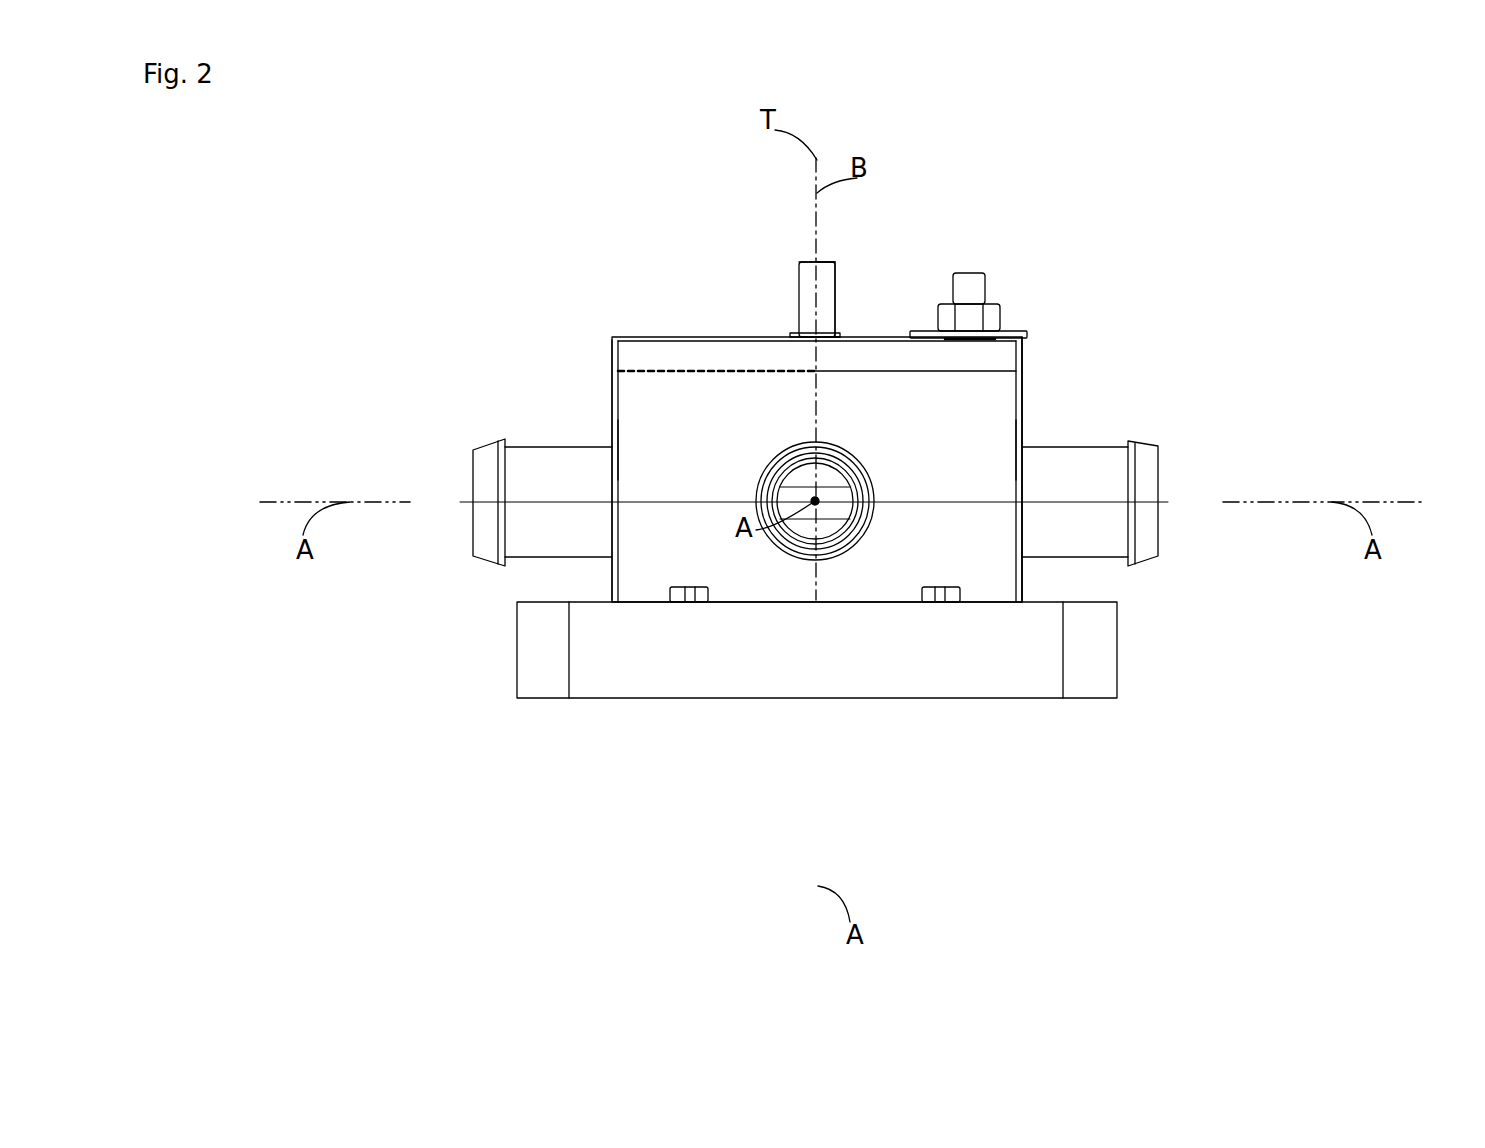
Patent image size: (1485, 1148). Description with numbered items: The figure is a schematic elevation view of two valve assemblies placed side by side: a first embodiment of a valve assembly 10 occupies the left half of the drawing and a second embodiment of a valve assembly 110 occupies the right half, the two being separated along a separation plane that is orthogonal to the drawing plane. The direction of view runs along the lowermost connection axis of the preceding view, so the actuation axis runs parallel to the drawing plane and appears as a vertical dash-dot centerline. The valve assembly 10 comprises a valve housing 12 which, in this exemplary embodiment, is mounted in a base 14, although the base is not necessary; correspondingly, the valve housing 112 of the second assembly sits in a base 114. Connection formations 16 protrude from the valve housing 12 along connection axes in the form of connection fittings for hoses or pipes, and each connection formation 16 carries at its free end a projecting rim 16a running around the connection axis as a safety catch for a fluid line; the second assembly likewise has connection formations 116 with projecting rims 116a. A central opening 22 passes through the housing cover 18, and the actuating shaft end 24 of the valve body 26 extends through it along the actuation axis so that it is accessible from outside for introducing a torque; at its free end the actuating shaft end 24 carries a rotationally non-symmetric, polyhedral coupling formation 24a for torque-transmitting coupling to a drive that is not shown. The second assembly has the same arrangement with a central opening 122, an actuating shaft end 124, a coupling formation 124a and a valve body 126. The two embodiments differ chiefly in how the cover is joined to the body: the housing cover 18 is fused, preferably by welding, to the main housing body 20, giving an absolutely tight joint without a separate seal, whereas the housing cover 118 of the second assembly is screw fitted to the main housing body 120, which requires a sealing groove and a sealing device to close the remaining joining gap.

The valve assembly 10 is at (345, 272).
The valve assembly 110 is at (1250, 270).
The valve housing 12 is at (602, 378).
The valve housing 112 is at (1028, 372).
The base 14 is at (535, 677).
The base 114 is at (1097, 670).
The connection formation 16 is at (553, 525).
The connection formation 116 is at (1072, 523).
The projecting rim 16a is at (490, 540).
The projecting rim 116a is at (1140, 532).
The housing cover 18 is at (678, 348).
The housing cover 118 is at (892, 348).
The main housing body 20 is at (648, 440).
The main housing body 120 is at (988, 433).
The central opening 22 is at (792, 334).
The central opening 122 is at (843, 334).
The actuating shaft end 24 is at (800, 302).
The actuating shaft end 124 is at (833, 300).
The coupling formation 24a is at (798, 270).
The coupling formation 124a is at (832, 268).
The valve body 26 is at (802, 527).
The valve body 126 is at (828, 527).